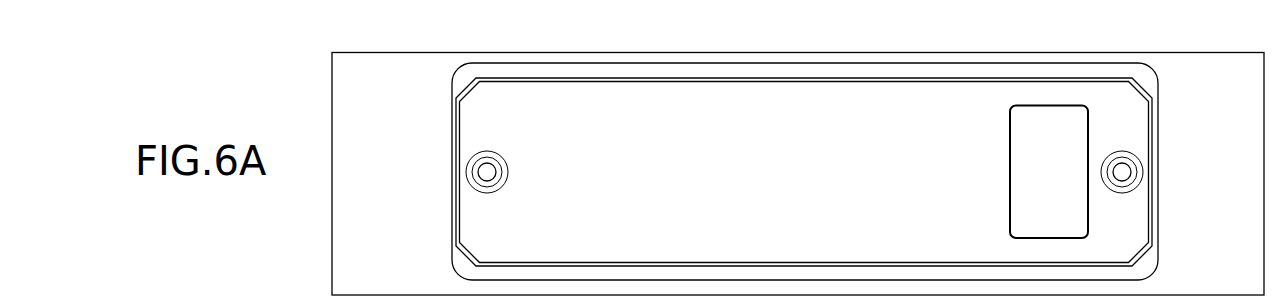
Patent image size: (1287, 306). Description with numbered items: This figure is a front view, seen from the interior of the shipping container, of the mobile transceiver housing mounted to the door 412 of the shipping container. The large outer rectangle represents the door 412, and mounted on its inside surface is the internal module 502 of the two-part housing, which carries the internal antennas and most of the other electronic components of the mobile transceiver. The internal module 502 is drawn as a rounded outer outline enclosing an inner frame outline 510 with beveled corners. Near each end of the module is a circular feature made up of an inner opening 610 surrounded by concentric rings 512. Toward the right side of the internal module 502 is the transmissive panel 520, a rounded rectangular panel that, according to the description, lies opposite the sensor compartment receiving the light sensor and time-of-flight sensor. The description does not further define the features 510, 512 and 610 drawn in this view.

The door 412 is at (1183, 180).
The internal module 502 is at (698, 108).
The frame outline 510 is at (831, 107).
The mounting ring 512 is at (495, 148).
The transmissive panel 520 is at (1038, 105).
The mounting hole 610 is at (486, 163).